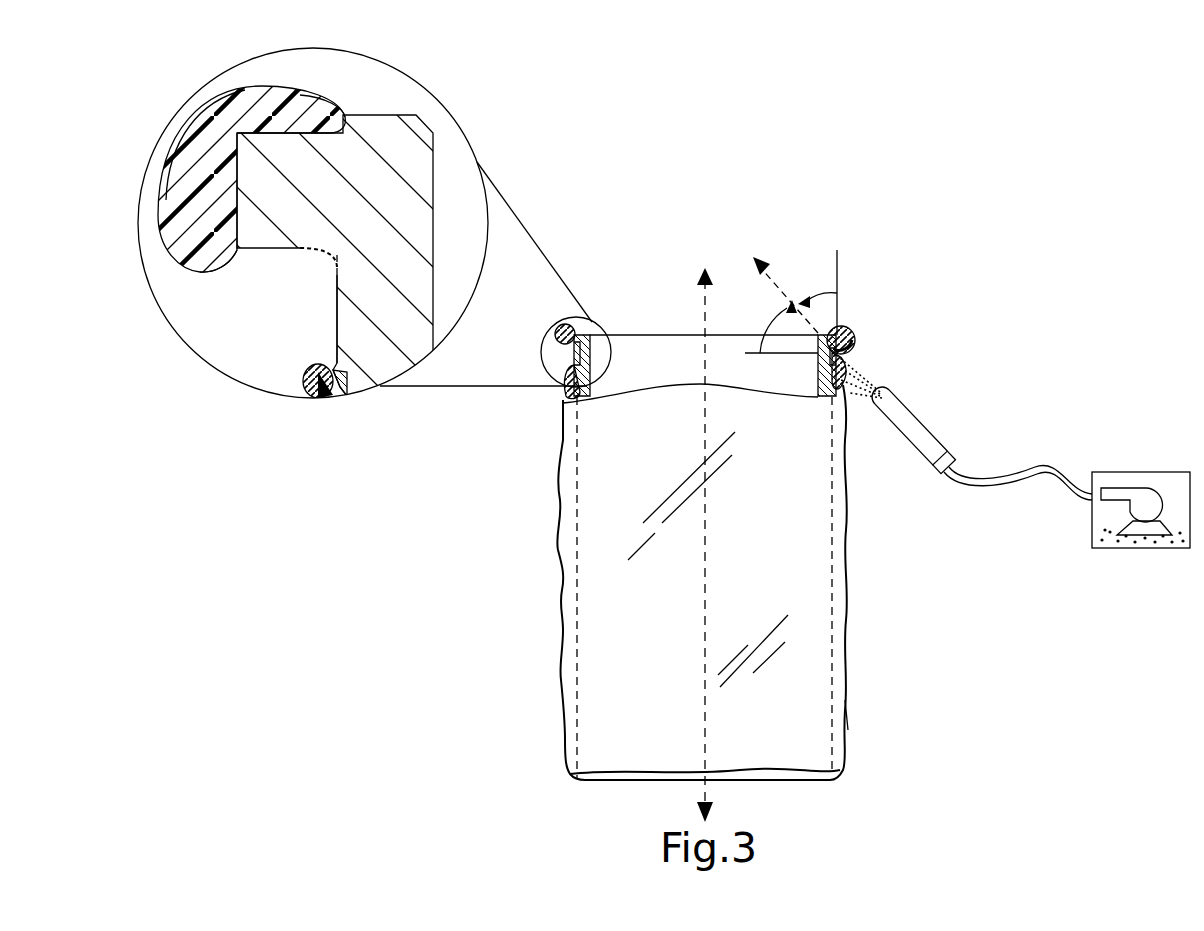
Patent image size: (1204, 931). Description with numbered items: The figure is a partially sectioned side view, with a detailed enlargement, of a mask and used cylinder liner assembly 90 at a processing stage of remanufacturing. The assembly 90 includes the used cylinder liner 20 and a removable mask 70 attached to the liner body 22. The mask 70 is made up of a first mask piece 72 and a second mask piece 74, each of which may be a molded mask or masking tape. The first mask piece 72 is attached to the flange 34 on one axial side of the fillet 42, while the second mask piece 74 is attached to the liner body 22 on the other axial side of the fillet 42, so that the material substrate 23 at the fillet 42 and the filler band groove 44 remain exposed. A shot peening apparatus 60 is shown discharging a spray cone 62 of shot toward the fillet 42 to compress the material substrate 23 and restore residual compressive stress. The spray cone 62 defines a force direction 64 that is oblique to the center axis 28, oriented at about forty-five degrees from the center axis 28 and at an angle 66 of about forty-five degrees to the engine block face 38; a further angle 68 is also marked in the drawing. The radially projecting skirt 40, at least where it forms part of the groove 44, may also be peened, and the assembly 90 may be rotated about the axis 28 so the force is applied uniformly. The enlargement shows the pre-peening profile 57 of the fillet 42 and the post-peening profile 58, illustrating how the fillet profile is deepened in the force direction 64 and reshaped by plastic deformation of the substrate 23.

The used cylinder liner 20 is at (488, 521).
The liner body 22 is at (577, 571).
The material substrate 23 is at (397, 202).
The center axis 28 is at (705, 569).
The flange 34 is at (247, 203).
The engine block face 38 is at (250, 258).
The radially projecting skirt 40 is at (336, 379).
The fillet 42 is at (343, 257).
The filler band groove 44 is at (312, 343).
The pre-peening profile 57 is at (330, 276).
The post-peening profile 58 is at (338, 246).
The shot peening apparatus 60 is at (1072, 530).
The spray cone 62 is at (880, 368).
The force direction 64 is at (775, 272).
The angle 66 is at (773, 316).
The spray angle 68 is at (812, 290).
The removable mask 70 is at (848, 573).
The first mask piece 72 is at (323, 108).
The second mask piece 74 is at (312, 398).
The mask and used cylinder liner assembly 90 is at (860, 708).